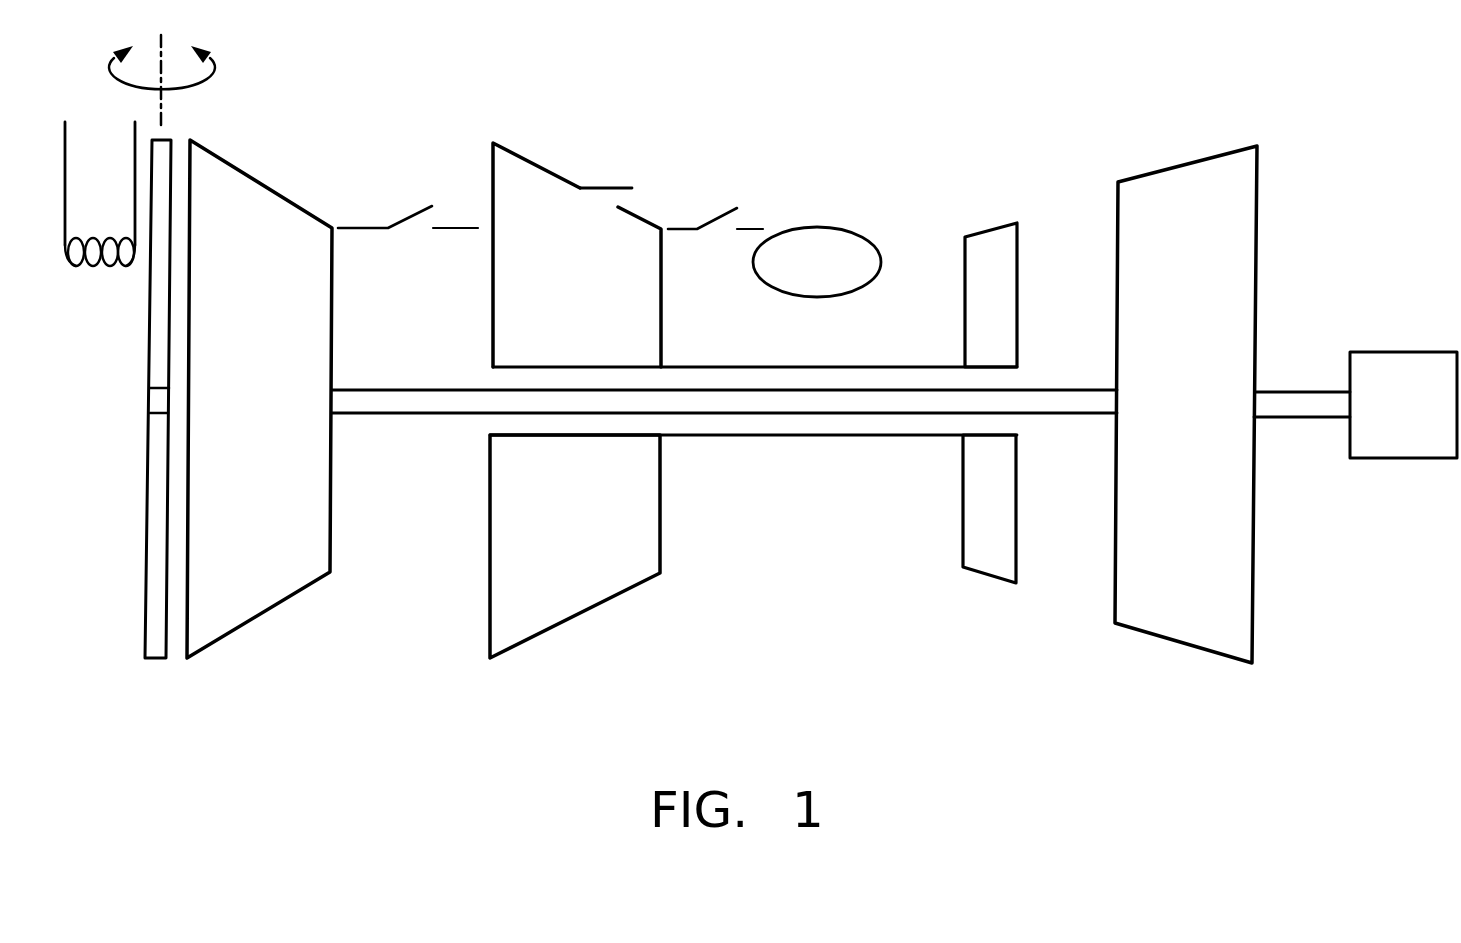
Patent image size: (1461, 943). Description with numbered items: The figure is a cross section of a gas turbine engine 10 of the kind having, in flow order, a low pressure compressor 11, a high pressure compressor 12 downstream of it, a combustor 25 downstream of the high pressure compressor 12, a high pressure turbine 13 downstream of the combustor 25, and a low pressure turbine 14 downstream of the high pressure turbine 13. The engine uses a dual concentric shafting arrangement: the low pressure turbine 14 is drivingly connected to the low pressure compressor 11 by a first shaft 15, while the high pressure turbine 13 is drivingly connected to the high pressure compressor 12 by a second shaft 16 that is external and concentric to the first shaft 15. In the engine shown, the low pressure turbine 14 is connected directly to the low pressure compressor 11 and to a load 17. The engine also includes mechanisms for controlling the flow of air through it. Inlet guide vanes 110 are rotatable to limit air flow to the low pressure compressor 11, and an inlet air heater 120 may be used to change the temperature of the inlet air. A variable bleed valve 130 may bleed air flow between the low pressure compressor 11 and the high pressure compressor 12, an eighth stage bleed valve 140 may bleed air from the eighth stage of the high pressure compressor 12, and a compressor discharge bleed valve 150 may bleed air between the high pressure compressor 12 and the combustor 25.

The gas turbine engine 10 is at (385, 158).
The low pressure compressor 11 is at (198, 570).
The high pressure compressor 12 is at (587, 598).
The high pressure turbine 13 is at (967, 537).
The low pressure turbine 14 is at (1233, 577).
The first shaft 15 is at (1033, 417).
The second shaft 16 is at (740, 438).
The load 17 is at (1370, 360).
The combustor 25 is at (812, 238).
The inlet guide vanes 110 is at (148, 360).
The inlet air heater 120 is at (80, 266).
The variable bleed valve 130 is at (408, 222).
The eighth stage bleed valve 140 is at (607, 190).
The compressor discharge bleed valve 150 is at (716, 220).